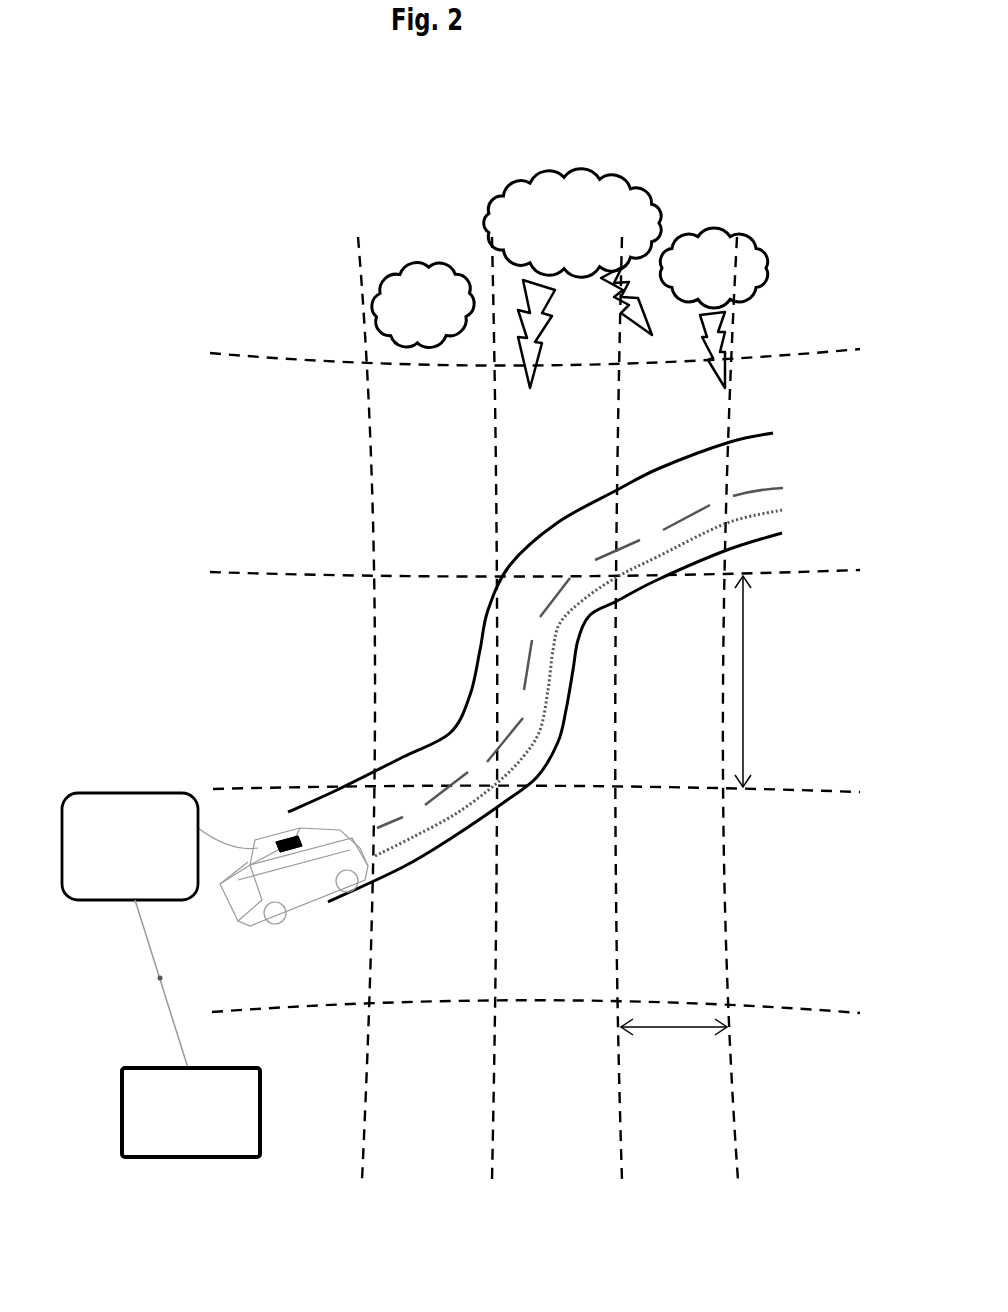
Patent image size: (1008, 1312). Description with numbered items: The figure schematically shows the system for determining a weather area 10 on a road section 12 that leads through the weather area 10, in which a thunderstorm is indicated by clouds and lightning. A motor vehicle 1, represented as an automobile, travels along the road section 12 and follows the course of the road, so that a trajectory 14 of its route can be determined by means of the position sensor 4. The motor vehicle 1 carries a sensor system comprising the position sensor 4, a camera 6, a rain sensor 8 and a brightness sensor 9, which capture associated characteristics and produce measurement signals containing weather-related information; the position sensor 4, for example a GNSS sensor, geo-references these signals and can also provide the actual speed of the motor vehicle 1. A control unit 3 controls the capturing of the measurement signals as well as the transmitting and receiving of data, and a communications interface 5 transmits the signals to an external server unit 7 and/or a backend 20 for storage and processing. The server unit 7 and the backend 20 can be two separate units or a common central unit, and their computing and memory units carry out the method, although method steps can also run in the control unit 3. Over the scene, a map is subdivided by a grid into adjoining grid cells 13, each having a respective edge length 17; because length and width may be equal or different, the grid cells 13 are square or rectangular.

The motor vehicle 1 is at (540, 666).
The control unit 3 is at (283, 899).
The communications interface 5 is at (283, 848).
The position sensor 4 is at (243, 803).
The brightness sensor 9 is at (283, 850).
The camera 6 is at (275, 788).
The rain sensor 8 is at (290, 848).
The external server unit 7 is at (88, 805).
The weather area 10 is at (425, 228).
The road section 12 is at (637, 508).
The grid cells 13 is at (390, 440).
The trajectory 14 is at (747, 516).
The edge length 17 is at (743, 702).
The backend 20 is at (248, 1103).